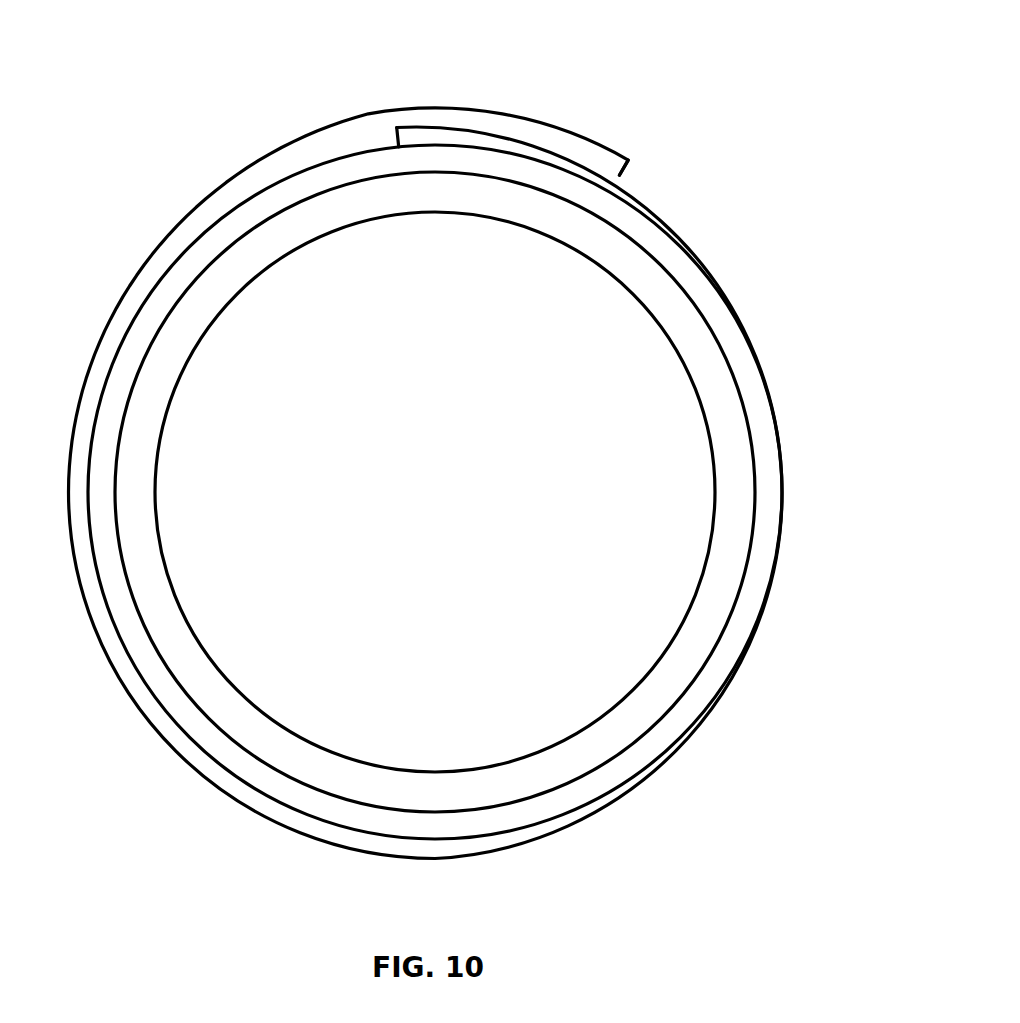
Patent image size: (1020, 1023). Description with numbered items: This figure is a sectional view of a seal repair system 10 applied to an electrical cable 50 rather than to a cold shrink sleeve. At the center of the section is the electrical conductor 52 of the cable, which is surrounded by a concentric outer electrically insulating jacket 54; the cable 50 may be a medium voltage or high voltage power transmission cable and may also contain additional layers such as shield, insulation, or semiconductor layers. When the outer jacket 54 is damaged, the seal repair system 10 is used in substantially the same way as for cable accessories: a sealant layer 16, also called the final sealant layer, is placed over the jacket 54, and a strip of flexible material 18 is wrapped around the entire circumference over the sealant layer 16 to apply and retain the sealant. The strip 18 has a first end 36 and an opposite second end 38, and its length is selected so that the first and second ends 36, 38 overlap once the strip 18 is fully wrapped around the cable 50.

The seal repair system 10 is at (124, 46).
The sealant layer 16 is at (757, 397).
The strip of flexible material 18 is at (803, 440).
The first end 36 is at (396, 140).
The second end 38 is at (630, 161).
The electrical cable 50 is at (653, 260).
The electrical conductor 52 is at (670, 332).
The outer electrically insulating jacket 54 is at (707, 368).